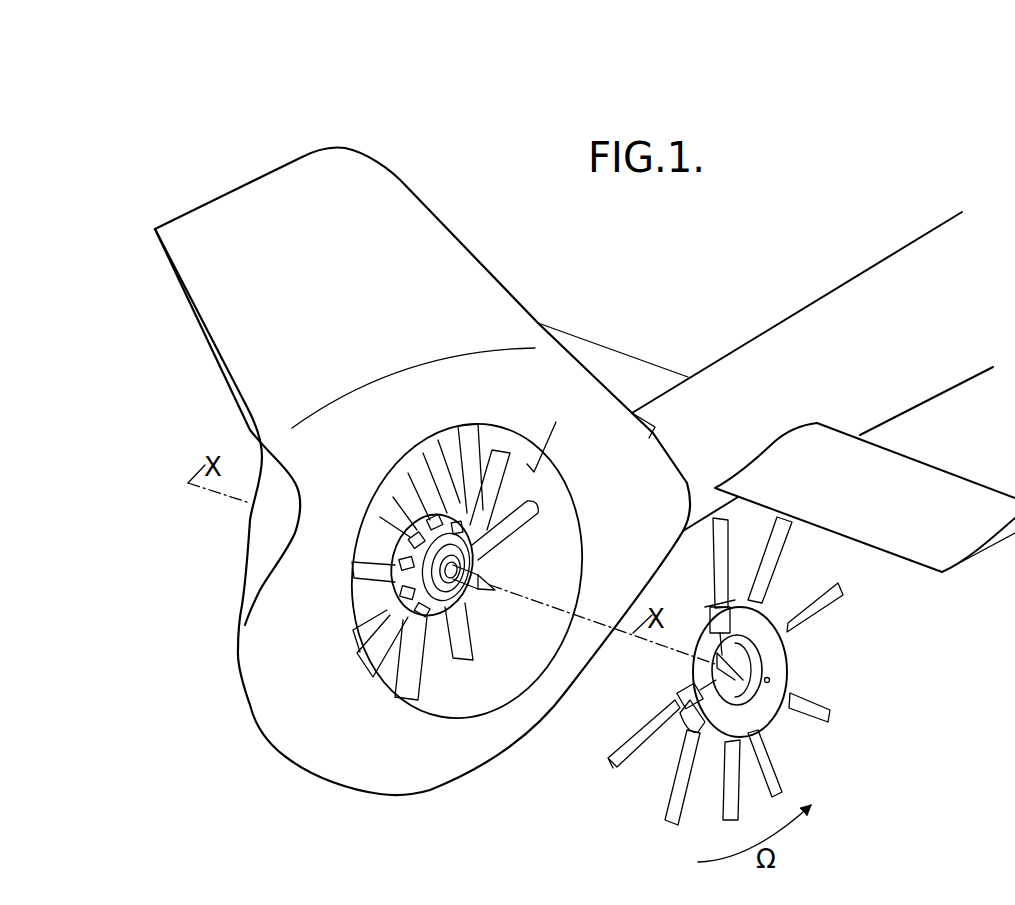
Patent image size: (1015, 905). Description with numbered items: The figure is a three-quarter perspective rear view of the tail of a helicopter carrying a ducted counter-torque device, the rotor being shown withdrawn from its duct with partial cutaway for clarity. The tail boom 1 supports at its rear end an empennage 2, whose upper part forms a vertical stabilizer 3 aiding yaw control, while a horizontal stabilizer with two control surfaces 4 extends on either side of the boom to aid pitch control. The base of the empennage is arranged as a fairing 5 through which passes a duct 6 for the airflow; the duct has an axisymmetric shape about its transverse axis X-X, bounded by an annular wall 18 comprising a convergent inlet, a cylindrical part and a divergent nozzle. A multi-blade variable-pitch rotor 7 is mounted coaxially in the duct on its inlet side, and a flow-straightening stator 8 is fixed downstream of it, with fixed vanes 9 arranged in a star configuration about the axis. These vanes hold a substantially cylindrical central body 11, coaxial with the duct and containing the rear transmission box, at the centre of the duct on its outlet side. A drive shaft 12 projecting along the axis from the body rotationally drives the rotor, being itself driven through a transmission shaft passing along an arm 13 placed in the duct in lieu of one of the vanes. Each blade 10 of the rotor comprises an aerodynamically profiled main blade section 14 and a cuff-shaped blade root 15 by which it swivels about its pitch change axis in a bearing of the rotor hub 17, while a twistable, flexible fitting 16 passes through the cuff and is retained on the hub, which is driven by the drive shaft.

The tail boom 1 is at (873, 303).
The empennage 2 is at (422, 471).
The vertical stabilizer 3 is at (360, 193).
The control surfaces 4 is at (628, 372).
The fairing 5 is at (298, 638).
The duct 6 is at (523, 544).
The rotor 7 is at (717, 671).
The flow-straightening stator 8 is at (407, 586).
The fixed vanes 9 is at (375, 651).
The blades 10 is at (767, 762).
The central body 11 is at (400, 533).
The drive shaft 12 is at (475, 558).
The arm 13 is at (500, 448).
The main blade section 14 is at (622, 750).
The blade root 15 is at (683, 696).
The fitting 16 is at (718, 676).
The rotor hub 17 is at (685, 722).
The annular wall 18 is at (552, 433).